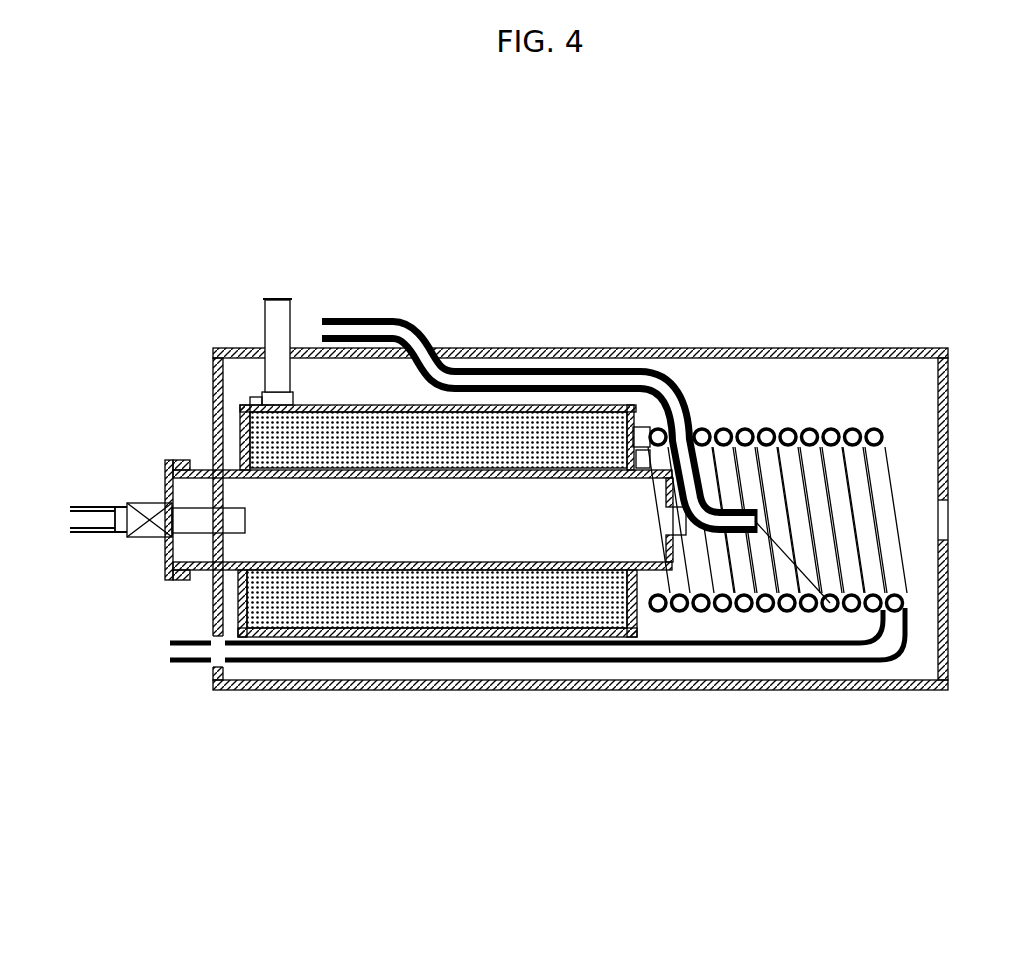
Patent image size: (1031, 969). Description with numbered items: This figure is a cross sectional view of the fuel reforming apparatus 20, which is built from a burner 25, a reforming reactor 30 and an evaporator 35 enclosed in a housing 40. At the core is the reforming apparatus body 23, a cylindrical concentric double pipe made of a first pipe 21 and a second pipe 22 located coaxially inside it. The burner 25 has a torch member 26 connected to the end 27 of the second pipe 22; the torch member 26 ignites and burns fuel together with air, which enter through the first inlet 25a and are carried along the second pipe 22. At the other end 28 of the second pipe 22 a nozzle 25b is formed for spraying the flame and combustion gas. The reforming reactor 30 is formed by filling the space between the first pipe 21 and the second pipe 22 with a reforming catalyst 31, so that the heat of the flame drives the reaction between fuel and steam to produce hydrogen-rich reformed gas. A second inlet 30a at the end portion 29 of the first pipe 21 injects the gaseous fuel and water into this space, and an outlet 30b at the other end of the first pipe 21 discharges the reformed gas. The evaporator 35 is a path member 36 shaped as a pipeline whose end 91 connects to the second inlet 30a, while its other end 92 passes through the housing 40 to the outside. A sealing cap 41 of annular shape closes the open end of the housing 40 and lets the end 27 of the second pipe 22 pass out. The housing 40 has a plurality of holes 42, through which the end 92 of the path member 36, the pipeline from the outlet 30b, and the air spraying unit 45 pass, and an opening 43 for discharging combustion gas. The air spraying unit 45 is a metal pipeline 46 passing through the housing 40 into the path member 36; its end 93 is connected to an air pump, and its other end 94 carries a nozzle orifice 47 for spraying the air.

The fuel reforming apparatus 20 is at (554, 201).
The first pipe 21 is at (357, 630).
The second pipe 22 is at (410, 592).
The reforming apparatus body 23 is at (437, 596).
The burner 25 is at (385, 592).
The first inlet 25a is at (121, 535).
The nozzle 25b is at (683, 537).
The torch member 26 is at (140, 503).
The end of second pipe 27 is at (383, 514).
The other end of second pipe 28 is at (648, 572).
The end portion of first pipe 29 is at (634, 427).
The reforming reactor 30 is at (395, 551).
The second inlet 30a is at (650, 390).
The outlet 30b is at (262, 398).
The reforming catalyst 31 is at (548, 637).
The evaporator 35 is at (503, 514).
The path member 36 is at (503, 514).
The housing 40 is at (587, 566).
The sealing cap 41 is at (212, 607).
The holes 42 is at (225, 667).
The opening 43 is at (950, 520).
The air spraying unit 45 is at (678, 380).
The pipeline 46 is at (530, 368).
The nozzle orifice 47 is at (777, 535).
The end of path member 91 is at (668, 435).
The other end of path member 92 is at (170, 662).
The end of pipeline 93 is at (545, 491).
The other end of pipeline 94 is at (830, 612).